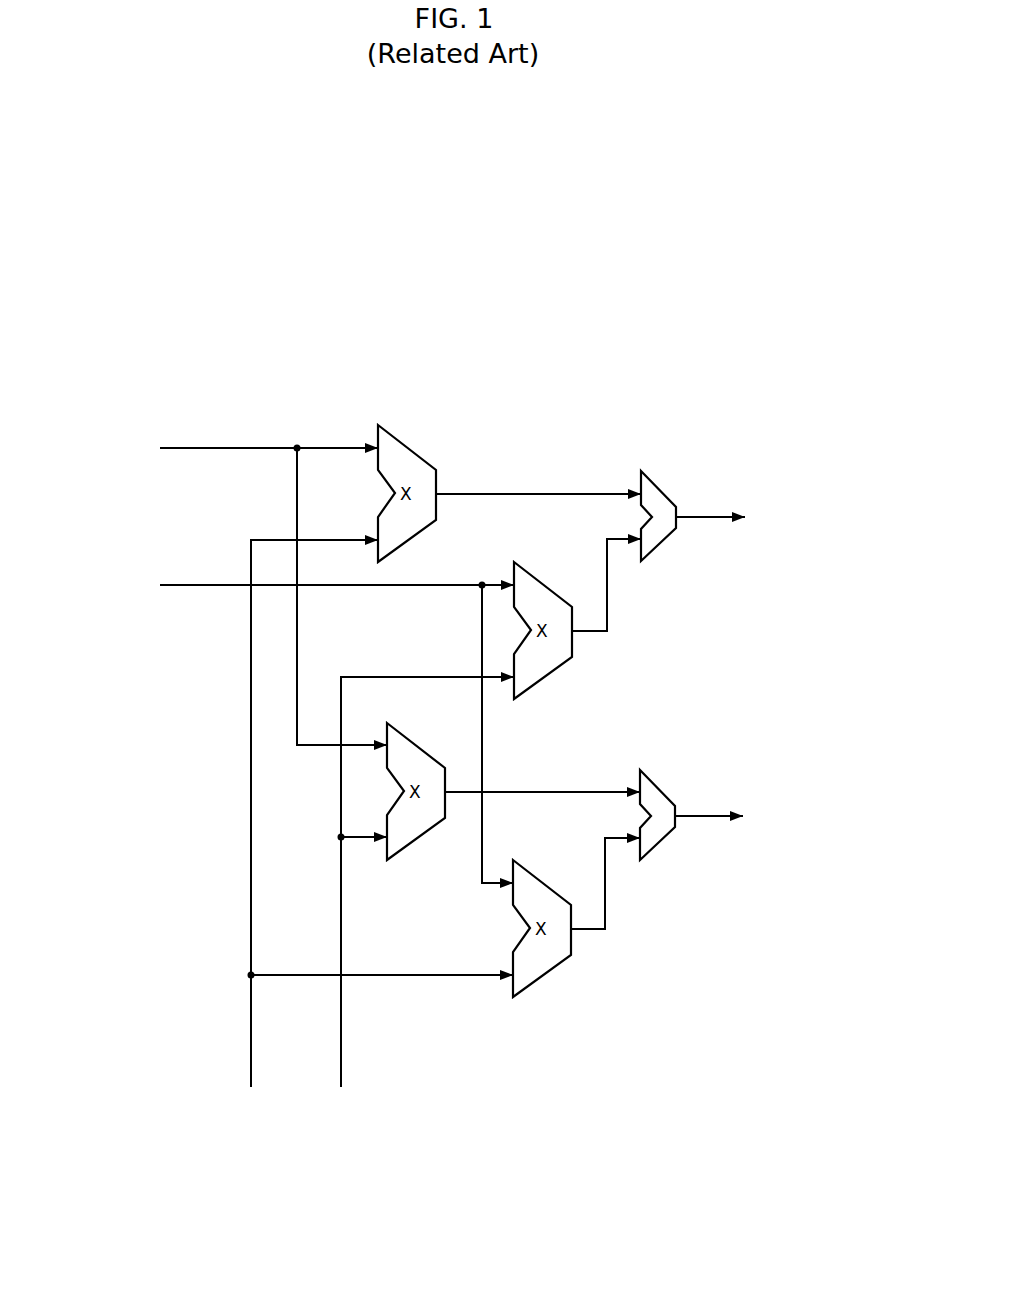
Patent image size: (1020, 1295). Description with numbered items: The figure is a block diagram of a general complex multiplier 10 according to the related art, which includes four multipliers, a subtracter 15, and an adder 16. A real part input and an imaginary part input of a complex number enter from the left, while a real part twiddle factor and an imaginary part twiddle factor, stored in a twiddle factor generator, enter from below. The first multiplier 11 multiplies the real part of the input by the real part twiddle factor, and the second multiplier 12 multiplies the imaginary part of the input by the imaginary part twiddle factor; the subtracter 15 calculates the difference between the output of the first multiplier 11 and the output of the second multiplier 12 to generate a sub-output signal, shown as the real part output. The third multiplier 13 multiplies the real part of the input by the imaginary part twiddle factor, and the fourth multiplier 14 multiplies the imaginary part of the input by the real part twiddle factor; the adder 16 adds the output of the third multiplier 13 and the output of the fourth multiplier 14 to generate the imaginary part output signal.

The complex multiplier 10 is at (696, 368).
The first multiplier 11 is at (407, 444).
The second multiplier 12 is at (545, 581).
The third multiplier 13 is at (418, 741).
The fourth multiplier 14 is at (544, 879).
The subtracter 15 is at (660, 485).
The adder 16 is at (659, 783).